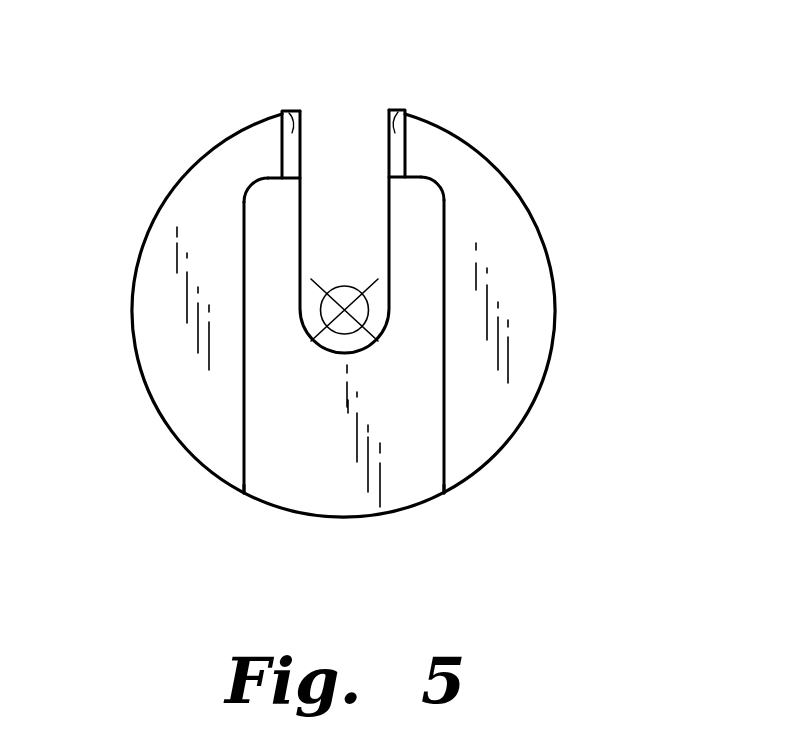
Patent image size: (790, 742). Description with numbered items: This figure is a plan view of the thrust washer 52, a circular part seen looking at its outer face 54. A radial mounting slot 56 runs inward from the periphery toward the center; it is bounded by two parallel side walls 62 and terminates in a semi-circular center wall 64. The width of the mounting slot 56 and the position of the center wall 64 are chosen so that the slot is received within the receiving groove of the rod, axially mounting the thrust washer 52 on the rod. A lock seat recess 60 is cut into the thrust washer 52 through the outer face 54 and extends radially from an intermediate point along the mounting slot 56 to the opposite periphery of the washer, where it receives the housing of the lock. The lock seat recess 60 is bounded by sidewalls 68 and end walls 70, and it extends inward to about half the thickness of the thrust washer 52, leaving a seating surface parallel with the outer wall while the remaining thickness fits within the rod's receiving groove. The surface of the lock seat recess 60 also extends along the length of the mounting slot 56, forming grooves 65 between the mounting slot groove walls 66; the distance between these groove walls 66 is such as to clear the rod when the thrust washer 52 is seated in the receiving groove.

The thrust washer 52 is at (530, 414).
The outer face 54 is at (155, 308).
The radial mounting slot 56 is at (386, 127).
The lock seat recess 60 is at (312, 447).
The side walls 62 is at (388, 273).
The semi-circular center wall 64 is at (347, 351).
The grooves 65 is at (293, 111).
The mounting slot groove walls 66 is at (397, 162).
The sidewalls 68 is at (246, 463).
The end walls 70 is at (272, 193).